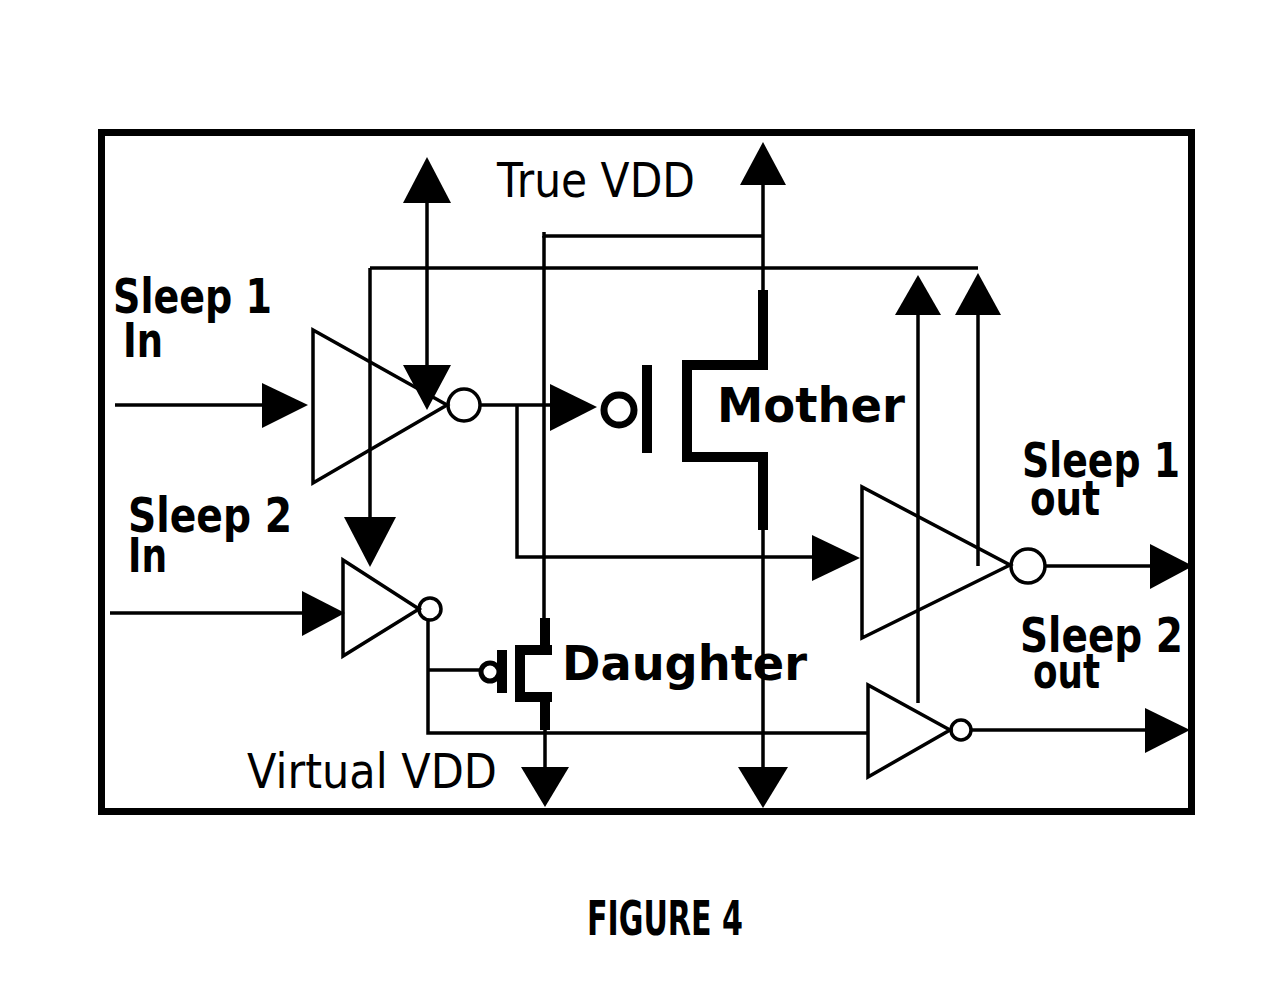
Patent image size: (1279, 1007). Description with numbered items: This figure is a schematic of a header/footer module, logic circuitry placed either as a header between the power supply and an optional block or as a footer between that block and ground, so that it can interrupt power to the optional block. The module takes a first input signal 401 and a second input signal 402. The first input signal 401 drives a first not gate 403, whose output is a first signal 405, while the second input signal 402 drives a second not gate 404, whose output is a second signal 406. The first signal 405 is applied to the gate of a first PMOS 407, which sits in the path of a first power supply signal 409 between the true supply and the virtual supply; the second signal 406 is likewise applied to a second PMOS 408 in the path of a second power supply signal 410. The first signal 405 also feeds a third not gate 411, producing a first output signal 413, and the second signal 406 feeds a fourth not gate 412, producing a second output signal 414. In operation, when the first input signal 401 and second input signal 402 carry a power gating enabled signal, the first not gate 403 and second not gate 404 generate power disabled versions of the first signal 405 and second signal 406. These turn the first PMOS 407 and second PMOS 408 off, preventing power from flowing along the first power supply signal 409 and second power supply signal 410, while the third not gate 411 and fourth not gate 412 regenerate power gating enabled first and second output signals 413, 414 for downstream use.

The first input signal 401 is at (211, 399).
The second input signal 402 is at (227, 608).
The first not gate 403 is at (396, 406).
The second not gate 404 is at (392, 608).
The first signal 405 is at (665, 482).
The second signal 406 is at (622, 676).
The first PMOS 407 is at (678, 410).
The second PMOS 408 is at (511, 672).
The first power supply signal 409 is at (738, 476).
The second power supply signal 410 is at (586, 509).
The third not gate 411 is at (953, 562).
The fourth not gate 412 is at (919, 731).
The first output signal 413 is at (1119, 562).
The second output signal 414 is at (1080, 724).